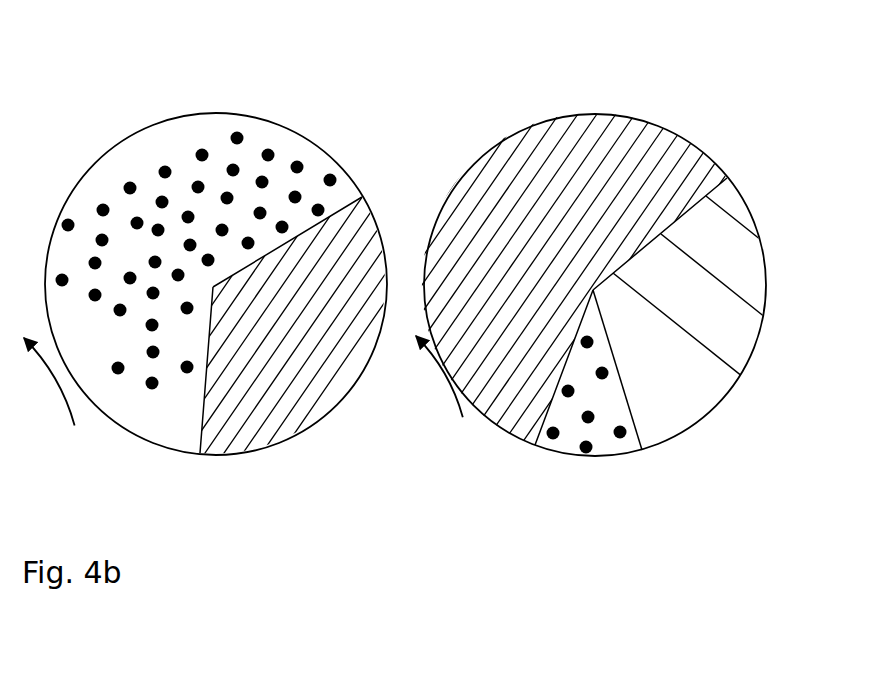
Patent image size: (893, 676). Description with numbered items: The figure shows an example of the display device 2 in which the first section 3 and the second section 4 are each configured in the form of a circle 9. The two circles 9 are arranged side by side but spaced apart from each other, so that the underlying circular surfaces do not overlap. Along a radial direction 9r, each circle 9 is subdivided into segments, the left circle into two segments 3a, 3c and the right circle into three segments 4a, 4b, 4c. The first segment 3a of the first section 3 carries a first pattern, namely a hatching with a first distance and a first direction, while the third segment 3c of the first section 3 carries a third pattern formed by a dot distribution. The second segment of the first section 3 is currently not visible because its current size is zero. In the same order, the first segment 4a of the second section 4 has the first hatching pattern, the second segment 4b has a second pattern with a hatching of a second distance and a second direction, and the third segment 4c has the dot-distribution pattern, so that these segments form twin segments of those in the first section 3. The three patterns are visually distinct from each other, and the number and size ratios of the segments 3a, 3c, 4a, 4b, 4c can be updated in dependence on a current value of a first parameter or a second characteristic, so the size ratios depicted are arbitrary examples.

The display device 2 is at (425, 113).
The first section 3 is at (197, 75).
The first segment of the first section 3a is at (262, 440).
The third segment of the first section 3c is at (161, 437).
The second section 4 is at (636, 90).
The first segment of the second section 4a is at (505, 423).
The second segment of the second section 4b is at (712, 400).
The third segment of the second section 4c is at (608, 450).
The circle 9 is at (110, 120).
The radial direction 9r is at (52, 407).